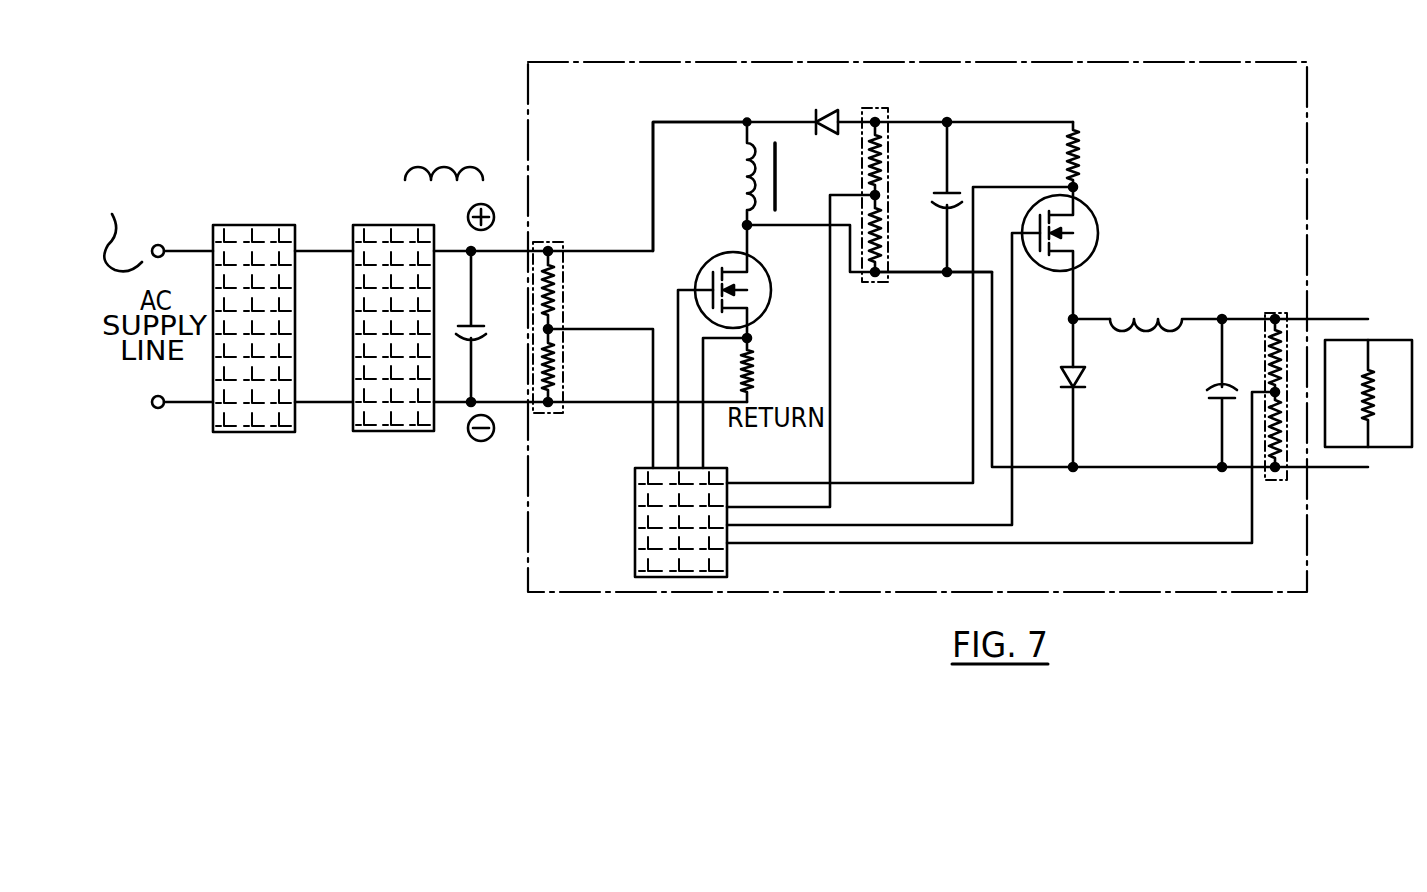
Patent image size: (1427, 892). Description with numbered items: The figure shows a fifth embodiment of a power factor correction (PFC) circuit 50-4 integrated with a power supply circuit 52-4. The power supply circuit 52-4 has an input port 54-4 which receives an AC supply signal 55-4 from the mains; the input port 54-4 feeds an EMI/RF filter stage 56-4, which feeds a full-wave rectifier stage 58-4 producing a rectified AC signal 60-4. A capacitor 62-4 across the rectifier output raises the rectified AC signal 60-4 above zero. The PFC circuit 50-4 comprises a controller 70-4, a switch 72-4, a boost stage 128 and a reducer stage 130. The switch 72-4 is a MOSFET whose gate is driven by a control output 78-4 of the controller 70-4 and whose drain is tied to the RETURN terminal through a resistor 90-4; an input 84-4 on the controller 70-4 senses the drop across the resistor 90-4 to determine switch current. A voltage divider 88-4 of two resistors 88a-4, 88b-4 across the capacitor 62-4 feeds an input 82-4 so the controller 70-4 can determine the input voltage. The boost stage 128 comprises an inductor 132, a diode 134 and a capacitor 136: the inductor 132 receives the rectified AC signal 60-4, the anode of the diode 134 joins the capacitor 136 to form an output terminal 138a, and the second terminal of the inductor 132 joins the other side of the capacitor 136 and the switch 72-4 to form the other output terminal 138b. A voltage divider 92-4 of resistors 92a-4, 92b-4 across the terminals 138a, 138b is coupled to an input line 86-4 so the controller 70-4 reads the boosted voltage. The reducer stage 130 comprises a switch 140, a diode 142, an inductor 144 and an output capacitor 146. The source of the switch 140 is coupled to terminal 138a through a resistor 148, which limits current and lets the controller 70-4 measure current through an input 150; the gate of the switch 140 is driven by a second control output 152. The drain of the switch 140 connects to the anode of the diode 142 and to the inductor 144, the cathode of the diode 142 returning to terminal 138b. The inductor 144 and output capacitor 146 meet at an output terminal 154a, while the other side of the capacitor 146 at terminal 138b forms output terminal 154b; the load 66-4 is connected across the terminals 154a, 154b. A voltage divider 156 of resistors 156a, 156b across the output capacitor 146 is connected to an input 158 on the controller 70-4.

The PFC circuit 50-4 is at (1228, 62).
The power supply circuit 52-4 is at (478, 501).
The input port 54-4 is at (168, 247).
The AC supply signal 55-4 is at (126, 225).
The EMI/RF filter stage 56-4 is at (252, 225).
The full-wave rectifier stage 58-4 is at (378, 225).
The rectified AC signal 60-4 is at (440, 167).
The capacitor 62-4 is at (476, 326).
The voltage divider 88-4 is at (548, 242).
The resistor 88a-4 is at (555, 292).
The resistor 88b-4 is at (555, 358).
The control output 78-4 is at (678, 320).
The input 82-4 is at (653, 432).
The input 84-4 is at (703, 448).
The controller 70-4 is at (727, 472).
The switch 72-4 is at (731, 252).
The resistor 90-4 is at (752, 352).
The boost stage 128 is at (730, 146).
The inductor 132 is at (753, 138).
The diode 134 is at (830, 112).
The voltage divider 92-4 is at (870, 112).
The resistor 92a-4 is at (881, 148).
The resistor 92b-4 is at (884, 245).
The output terminal 138a is at (953, 120).
The capacitor 136 is at (953, 193).
The output terminal 138b is at (947, 280).
The resistor 148 is at (1081, 146).
The switch 140 is at (1098, 220).
The reducer stage 130 is at (1124, 259).
The inductor 144 is at (1140, 324).
The diode 142 is at (1062, 378).
The output capacitor 146 is at (1215, 402).
The output terminal 154a is at (1218, 318).
The output terminal 154b is at (1222, 470).
The voltage divider 156 is at (1282, 312).
The resistor 156a is at (1266, 350).
The resistor 156b is at (1268, 432).
The load 66-4 is at (1378, 342).
The input line 86-4 is at (832, 456).
The input 150 is at (913, 483).
The second control output 152 is at (898, 525).
The input 158 is at (1040, 543).